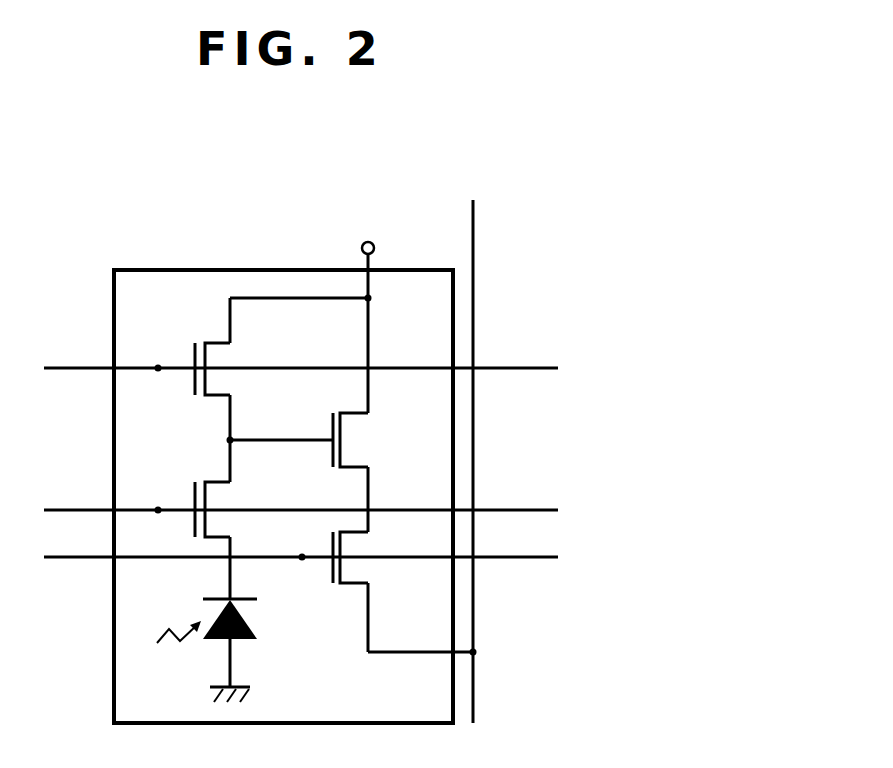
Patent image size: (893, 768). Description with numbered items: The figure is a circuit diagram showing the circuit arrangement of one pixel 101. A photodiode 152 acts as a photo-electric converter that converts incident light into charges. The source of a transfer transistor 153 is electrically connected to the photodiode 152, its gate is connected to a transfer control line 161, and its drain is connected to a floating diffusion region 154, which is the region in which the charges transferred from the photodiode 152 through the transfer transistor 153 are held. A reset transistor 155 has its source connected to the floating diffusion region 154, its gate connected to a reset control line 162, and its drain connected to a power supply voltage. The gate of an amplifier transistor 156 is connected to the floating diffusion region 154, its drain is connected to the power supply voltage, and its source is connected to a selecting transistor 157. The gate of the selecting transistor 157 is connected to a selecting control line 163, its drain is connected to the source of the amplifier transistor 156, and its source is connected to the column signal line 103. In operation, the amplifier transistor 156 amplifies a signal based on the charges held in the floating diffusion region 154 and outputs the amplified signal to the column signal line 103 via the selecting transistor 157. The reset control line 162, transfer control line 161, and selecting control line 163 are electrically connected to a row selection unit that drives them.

The pixel 101 is at (217, 268).
The column signal line 103 is at (477, 695).
The photodiode 152 is at (257, 610).
The transfer transistor 153 is at (219, 499).
The floating diffusion region 154 is at (227, 440).
The reset transistor 155 is at (217, 357).
The amplifier transistor 156 is at (358, 439).
The selecting transistor 157 is at (358, 573).
The transfer control line 161 is at (300, 497).
The reset control line 162 is at (300, 354).
The selecting control line 163 is at (300, 543).